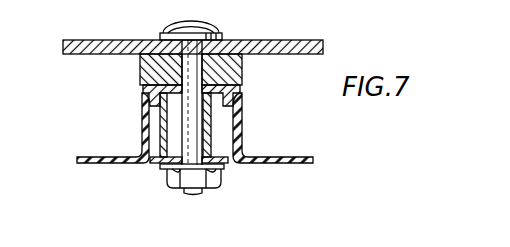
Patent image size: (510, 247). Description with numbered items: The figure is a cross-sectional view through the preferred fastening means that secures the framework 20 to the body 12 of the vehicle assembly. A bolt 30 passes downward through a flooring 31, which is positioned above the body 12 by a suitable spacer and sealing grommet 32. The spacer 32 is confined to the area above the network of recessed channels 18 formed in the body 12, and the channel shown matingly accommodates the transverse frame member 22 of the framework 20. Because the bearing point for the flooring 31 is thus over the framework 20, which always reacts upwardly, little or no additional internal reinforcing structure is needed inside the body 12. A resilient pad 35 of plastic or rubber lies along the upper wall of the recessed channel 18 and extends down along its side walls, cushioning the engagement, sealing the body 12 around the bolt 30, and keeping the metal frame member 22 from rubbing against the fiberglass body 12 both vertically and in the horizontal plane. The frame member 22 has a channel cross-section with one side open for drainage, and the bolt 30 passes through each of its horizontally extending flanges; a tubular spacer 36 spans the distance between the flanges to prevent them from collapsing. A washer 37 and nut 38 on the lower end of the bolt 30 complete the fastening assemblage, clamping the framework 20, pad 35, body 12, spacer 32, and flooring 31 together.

The body 12 is at (296, 157).
The recessed channels 18 is at (235, 140).
The framework 20 is at (244, 173).
The transverse frame member 22 is at (153, 164).
The bolt 30 is at (198, 67).
The flooring 31 is at (323, 45).
The spacer and sealing grommet 32 is at (230, 72).
The resilient pad 35 is at (143, 98).
The tubular spacer 36 is at (172, 143).
The washer 37 is at (222, 170).
The nut 38 is at (170, 180).